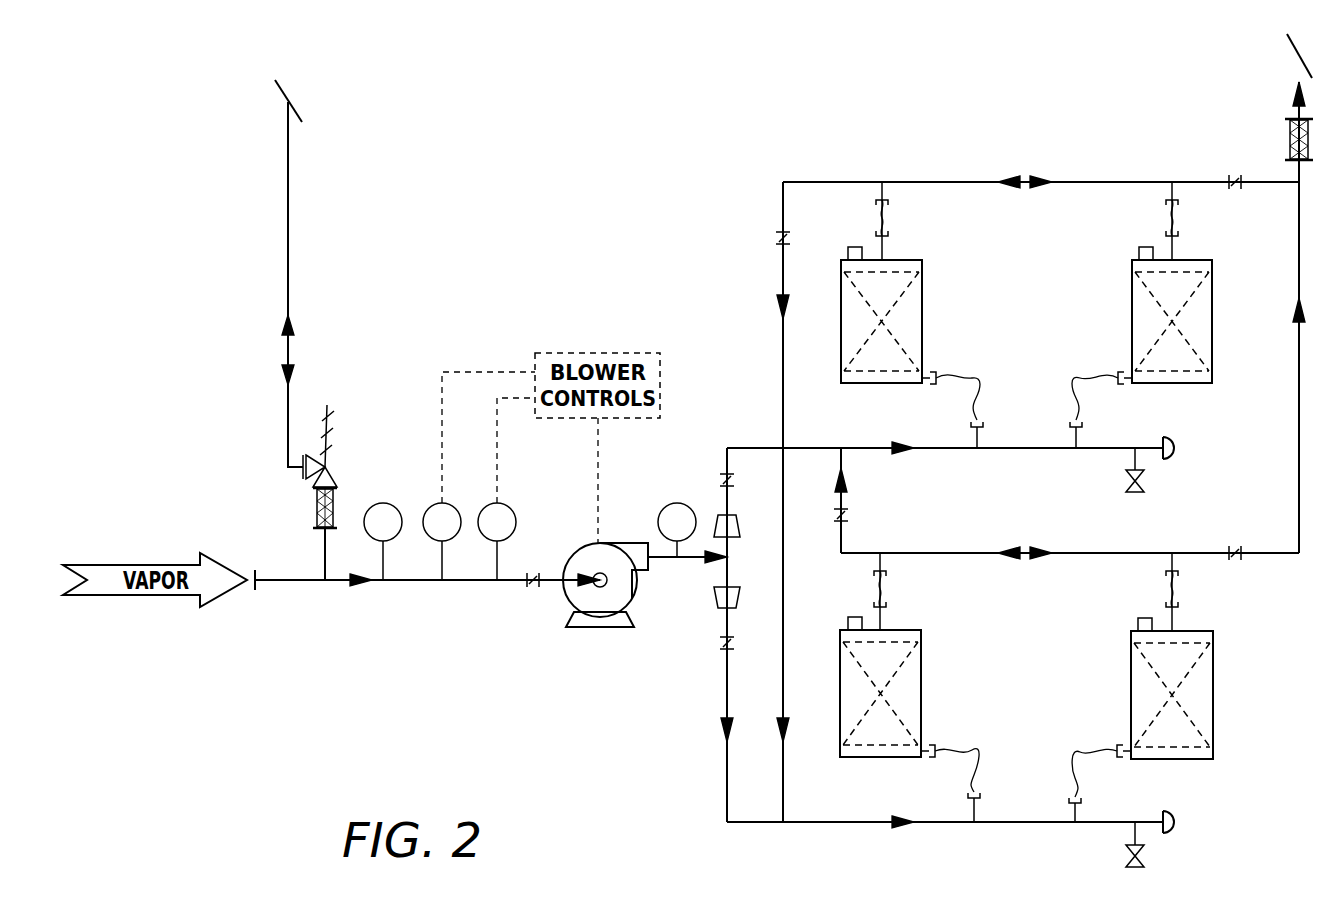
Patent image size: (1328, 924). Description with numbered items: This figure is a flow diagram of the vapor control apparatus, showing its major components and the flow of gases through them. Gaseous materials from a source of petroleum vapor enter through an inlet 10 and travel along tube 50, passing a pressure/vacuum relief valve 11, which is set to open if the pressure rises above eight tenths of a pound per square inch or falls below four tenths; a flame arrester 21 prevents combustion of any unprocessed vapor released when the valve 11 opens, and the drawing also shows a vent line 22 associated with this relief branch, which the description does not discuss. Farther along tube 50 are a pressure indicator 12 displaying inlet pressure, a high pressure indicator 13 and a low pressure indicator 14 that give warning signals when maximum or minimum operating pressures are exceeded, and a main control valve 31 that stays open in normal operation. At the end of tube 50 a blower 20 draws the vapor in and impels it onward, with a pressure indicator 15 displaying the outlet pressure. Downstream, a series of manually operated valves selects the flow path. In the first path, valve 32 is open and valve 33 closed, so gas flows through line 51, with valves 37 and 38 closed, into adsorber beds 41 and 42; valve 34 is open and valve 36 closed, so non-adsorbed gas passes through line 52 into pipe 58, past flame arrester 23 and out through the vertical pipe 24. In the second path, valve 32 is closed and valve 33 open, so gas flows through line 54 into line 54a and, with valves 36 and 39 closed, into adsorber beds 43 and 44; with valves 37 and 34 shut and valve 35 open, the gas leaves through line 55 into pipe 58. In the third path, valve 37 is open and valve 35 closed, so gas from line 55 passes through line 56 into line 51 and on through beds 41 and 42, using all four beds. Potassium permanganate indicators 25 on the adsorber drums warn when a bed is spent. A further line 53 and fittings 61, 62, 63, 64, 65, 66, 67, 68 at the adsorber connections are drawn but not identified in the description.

The inlet 10 is at (255, 592).
The pressure/vacuum relief valve 11 is at (328, 465).
The pressure indicator 12 is at (383, 541).
The high pressure indicator 13 is at (479, 476).
The low pressure indicator 14 is at (506, 489).
The pressure indicator 15 is at (677, 530).
The blower 20 is at (626, 618).
The flame arrester 21 is at (316, 508).
The vent line 22 is at (290, 178).
The flame arrester 23 is at (1296, 112).
The vertical pipe 24 is at (1298, 66).
The potassium permanganate indicators 25 is at (854, 247).
The main control valve 31 is at (533, 590).
The valve 32 is at (720, 480).
The valve 33 is at (720, 643).
The valve 34 is at (1230, 180).
The valve 35 is at (1235, 550).
The valve 36 is at (776, 238).
The valve 37 is at (849, 516).
The valve 38 is at (1128, 478).
The valve 39 is at (1128, 852).
The adsorber bed 41 is at (922, 322).
The adsorber bed 42 is at (1212, 322).
The adsorber bed 43 is at (921, 695).
The adsorber bed 44 is at (1213, 694).
The tube 50 is at (422, 582).
The line 51 is at (805, 448).
The line 52 is at (1025, 182).
The bypass line 53 is at (783, 390).
The line 54 is at (727, 766).
The line 54a is at (810, 822).
The line 55 is at (1020, 553).
The line 56 is at (847, 486).
The pipe 58 is at (1299, 432).
The inlet valve 61 is at (945, 378).
The outlet valve 62 is at (886, 220).
The inlet valve 63 is at (1105, 378).
The outlet valve 64 is at (1176, 220).
The inlet valve 65 is at (975, 751).
The outlet valve 66 is at (884, 595).
The inlet valve 67 is at (1076, 752).
The outlet valve 68 is at (1176, 595).